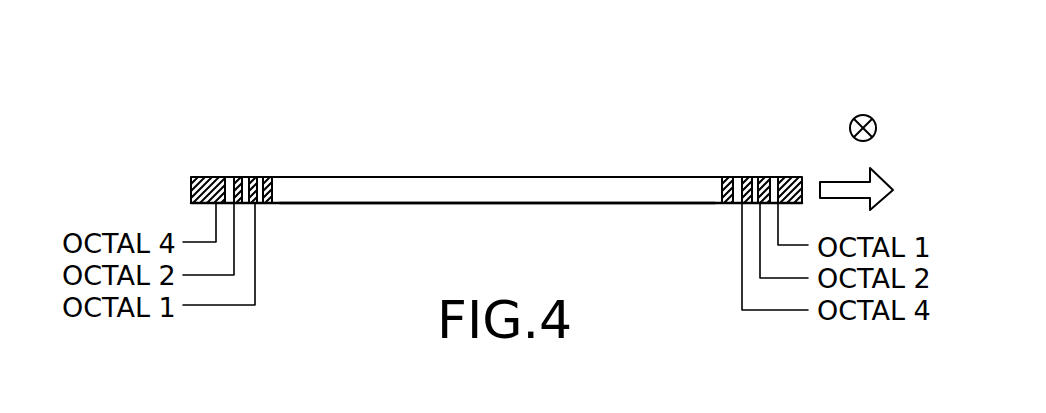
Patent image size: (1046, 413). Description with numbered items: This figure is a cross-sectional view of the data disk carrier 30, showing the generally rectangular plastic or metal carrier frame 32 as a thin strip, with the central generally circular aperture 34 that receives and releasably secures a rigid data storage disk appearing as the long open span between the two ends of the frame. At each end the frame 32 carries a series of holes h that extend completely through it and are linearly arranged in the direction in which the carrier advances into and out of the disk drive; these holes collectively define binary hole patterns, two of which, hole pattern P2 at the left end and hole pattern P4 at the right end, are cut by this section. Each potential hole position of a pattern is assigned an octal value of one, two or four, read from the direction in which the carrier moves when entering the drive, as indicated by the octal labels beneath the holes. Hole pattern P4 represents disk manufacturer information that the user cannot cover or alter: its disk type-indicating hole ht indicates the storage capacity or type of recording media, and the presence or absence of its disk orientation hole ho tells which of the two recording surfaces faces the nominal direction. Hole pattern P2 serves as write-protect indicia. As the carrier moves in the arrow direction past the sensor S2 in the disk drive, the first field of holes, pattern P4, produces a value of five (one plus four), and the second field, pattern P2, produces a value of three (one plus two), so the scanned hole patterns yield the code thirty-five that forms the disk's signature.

The carrier 30 is at (578, 158).
The carrier frame 32 is at (312, 204).
The circular aperture 34 is at (447, 185).
The hole pattern P2 is at (206, 150).
The hole pattern P4 is at (780, 148).
The sensor S2 is at (867, 114).
The holes h is at (252, 177).
The disk type-indicating hole ht is at (734, 177).
The disk orientation hole ho is at (777, 177).